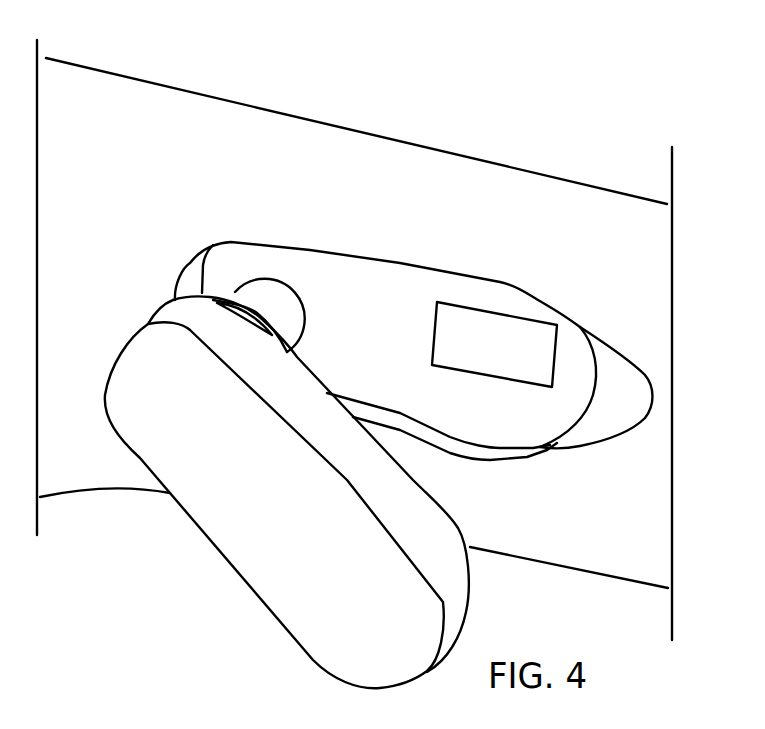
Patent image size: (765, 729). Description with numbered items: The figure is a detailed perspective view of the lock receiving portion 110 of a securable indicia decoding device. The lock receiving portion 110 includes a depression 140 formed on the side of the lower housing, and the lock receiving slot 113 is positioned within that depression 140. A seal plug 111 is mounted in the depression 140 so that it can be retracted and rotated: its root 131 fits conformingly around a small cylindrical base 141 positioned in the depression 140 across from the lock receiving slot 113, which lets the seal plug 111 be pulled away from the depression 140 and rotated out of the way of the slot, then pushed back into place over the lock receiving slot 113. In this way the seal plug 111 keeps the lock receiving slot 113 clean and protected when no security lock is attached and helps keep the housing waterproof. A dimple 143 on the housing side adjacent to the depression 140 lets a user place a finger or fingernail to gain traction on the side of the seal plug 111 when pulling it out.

The lock receiving portion 110 is at (596, 152).
The seal plug 111 is at (237, 572).
The lock receiving slot 113 is at (515, 315).
The root 131 is at (223, 295).
The depression 140 is at (385, 262).
The small cylindrical base 141 is at (267, 280).
The dimple 143 is at (603, 445).